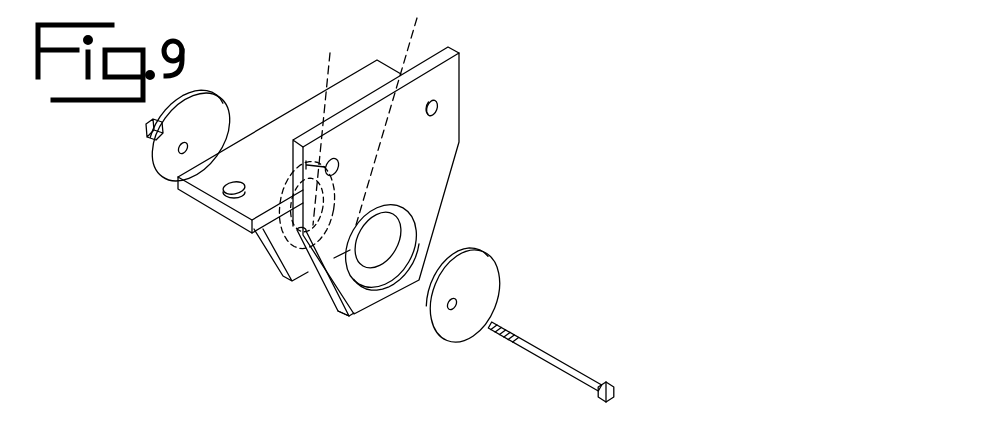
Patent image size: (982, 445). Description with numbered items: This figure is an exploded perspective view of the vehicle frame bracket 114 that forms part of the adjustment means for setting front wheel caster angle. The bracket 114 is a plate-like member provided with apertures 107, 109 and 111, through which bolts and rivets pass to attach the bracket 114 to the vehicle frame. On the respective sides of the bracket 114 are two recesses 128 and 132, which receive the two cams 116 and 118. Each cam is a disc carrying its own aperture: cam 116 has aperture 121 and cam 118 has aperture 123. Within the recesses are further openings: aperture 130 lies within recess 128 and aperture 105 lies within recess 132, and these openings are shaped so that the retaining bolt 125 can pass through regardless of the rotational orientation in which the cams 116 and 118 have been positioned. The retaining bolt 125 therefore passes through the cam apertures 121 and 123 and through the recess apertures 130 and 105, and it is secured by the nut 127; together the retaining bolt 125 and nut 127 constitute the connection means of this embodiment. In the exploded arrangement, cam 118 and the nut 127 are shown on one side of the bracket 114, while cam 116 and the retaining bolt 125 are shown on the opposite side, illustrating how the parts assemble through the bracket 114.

The aperture 105 is at (401, 112).
The aperture 107 is at (240, 217).
The aperture 109 is at (340, 167).
The aperture 111 is at (437, 103).
The vehicle frame bracket 114 is at (459, 142).
The cam 116 is at (500, 268).
The cam 118 is at (225, 101).
The aperture 121 is at (452, 307).
The aperture 123 is at (178, 152).
The retaining bolt 125 is at (537, 343).
The nut 127 is at (145, 136).
The recess 128 is at (362, 318).
The aperture 130 is at (332, 290).
The recess 132 is at (335, 123).